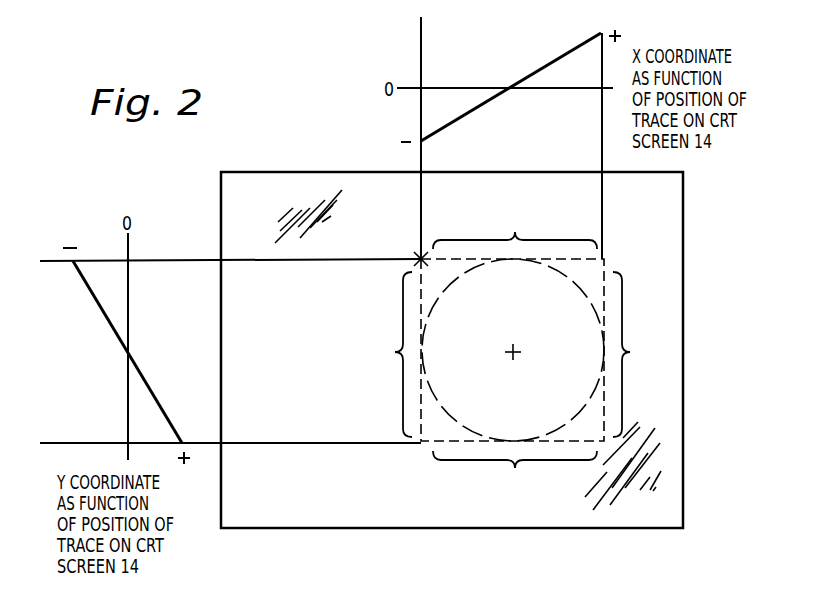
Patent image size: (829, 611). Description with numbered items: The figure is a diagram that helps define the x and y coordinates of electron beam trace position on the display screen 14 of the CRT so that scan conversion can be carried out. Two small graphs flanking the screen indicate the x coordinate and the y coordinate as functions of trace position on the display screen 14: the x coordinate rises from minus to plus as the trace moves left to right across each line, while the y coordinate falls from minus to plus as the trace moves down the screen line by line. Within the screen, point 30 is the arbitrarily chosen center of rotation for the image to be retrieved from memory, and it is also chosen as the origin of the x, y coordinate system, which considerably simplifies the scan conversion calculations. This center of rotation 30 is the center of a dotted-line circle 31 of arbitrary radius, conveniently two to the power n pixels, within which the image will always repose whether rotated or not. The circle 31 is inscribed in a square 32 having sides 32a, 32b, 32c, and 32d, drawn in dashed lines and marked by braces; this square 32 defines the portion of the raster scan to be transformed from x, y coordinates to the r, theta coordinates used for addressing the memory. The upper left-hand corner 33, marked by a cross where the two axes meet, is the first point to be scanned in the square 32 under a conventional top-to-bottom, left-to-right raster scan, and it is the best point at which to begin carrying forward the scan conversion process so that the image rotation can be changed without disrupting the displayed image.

The display screen 14 is at (251, 210).
The center of rotation 30 is at (527, 337).
The dotted-line circle 31 is at (454, 284).
The square 32 is at (418, 477).
The side of square 32a is at (515, 228).
The side of square 32b is at (388, 354).
The side of square 32c is at (515, 473).
The side of square 32d is at (637, 354).
The upper left-hand corner 33 is at (419, 257).